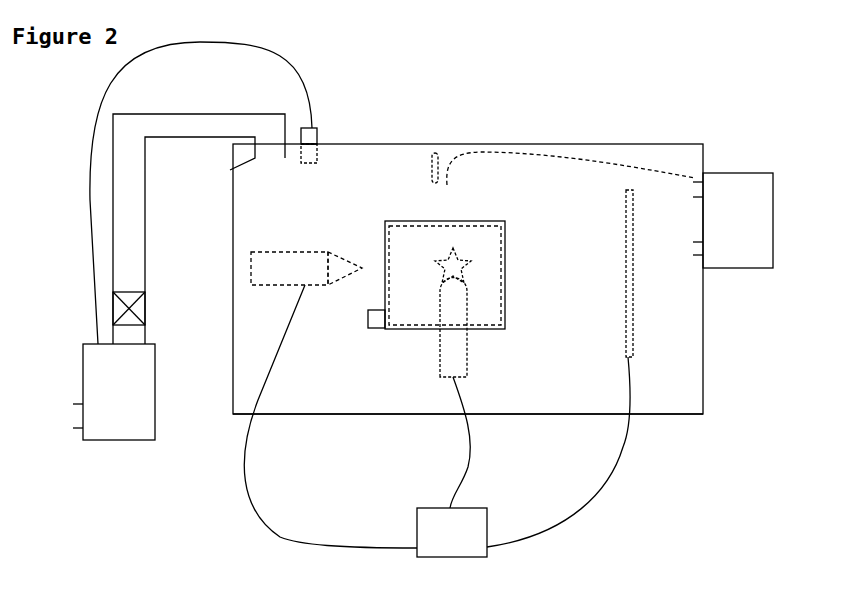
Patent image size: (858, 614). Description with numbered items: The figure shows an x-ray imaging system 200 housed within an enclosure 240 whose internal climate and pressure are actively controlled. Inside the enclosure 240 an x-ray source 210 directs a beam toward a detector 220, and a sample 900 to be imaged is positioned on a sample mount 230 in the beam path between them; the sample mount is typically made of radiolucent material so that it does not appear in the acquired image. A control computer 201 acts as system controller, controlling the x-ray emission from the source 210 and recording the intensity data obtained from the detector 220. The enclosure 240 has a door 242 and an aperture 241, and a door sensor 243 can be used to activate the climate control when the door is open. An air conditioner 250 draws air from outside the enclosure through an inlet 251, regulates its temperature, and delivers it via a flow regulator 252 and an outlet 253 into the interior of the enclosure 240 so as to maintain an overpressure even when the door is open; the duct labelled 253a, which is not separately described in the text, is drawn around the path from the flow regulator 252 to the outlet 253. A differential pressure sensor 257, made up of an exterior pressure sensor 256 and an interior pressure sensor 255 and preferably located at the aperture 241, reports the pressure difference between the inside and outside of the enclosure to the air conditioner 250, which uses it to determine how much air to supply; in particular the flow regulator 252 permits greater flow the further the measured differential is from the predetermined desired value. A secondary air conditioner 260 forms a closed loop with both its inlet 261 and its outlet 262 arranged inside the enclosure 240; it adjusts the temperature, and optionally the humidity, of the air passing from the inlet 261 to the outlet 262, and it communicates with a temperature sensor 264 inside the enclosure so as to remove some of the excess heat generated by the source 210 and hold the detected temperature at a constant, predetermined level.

The x-ray imaging system 200 is at (756, 430).
The control computer 201 is at (417, 533).
The source 210 is at (320, 252).
The detector 220 is at (630, 190).
The sample mount 230 is at (467, 345).
The enclosure 240 is at (682, 415).
The aperture 241 is at (402, 330).
The door 242 is at (417, 330).
The door sensor 243 is at (368, 328).
The air conditioner 250 is at (118, 440).
The inlet 251 is at (78, 403).
The flow regulator 252 is at (145, 313).
The outlet 253 is at (253, 155).
The outer duct 253a is at (130, 113).
The interior pressure sensor 255 is at (317, 155).
The exterior pressure sensor 256 is at (318, 142).
The differential pressure sensor 257 is at (302, 128).
The secondary air conditioner 260 is at (773, 225).
The inlet 261 is at (703, 173).
The outlet 262 is at (698, 254).
The temperature sensor 264 is at (458, 193).
The sample 900 is at (472, 280).